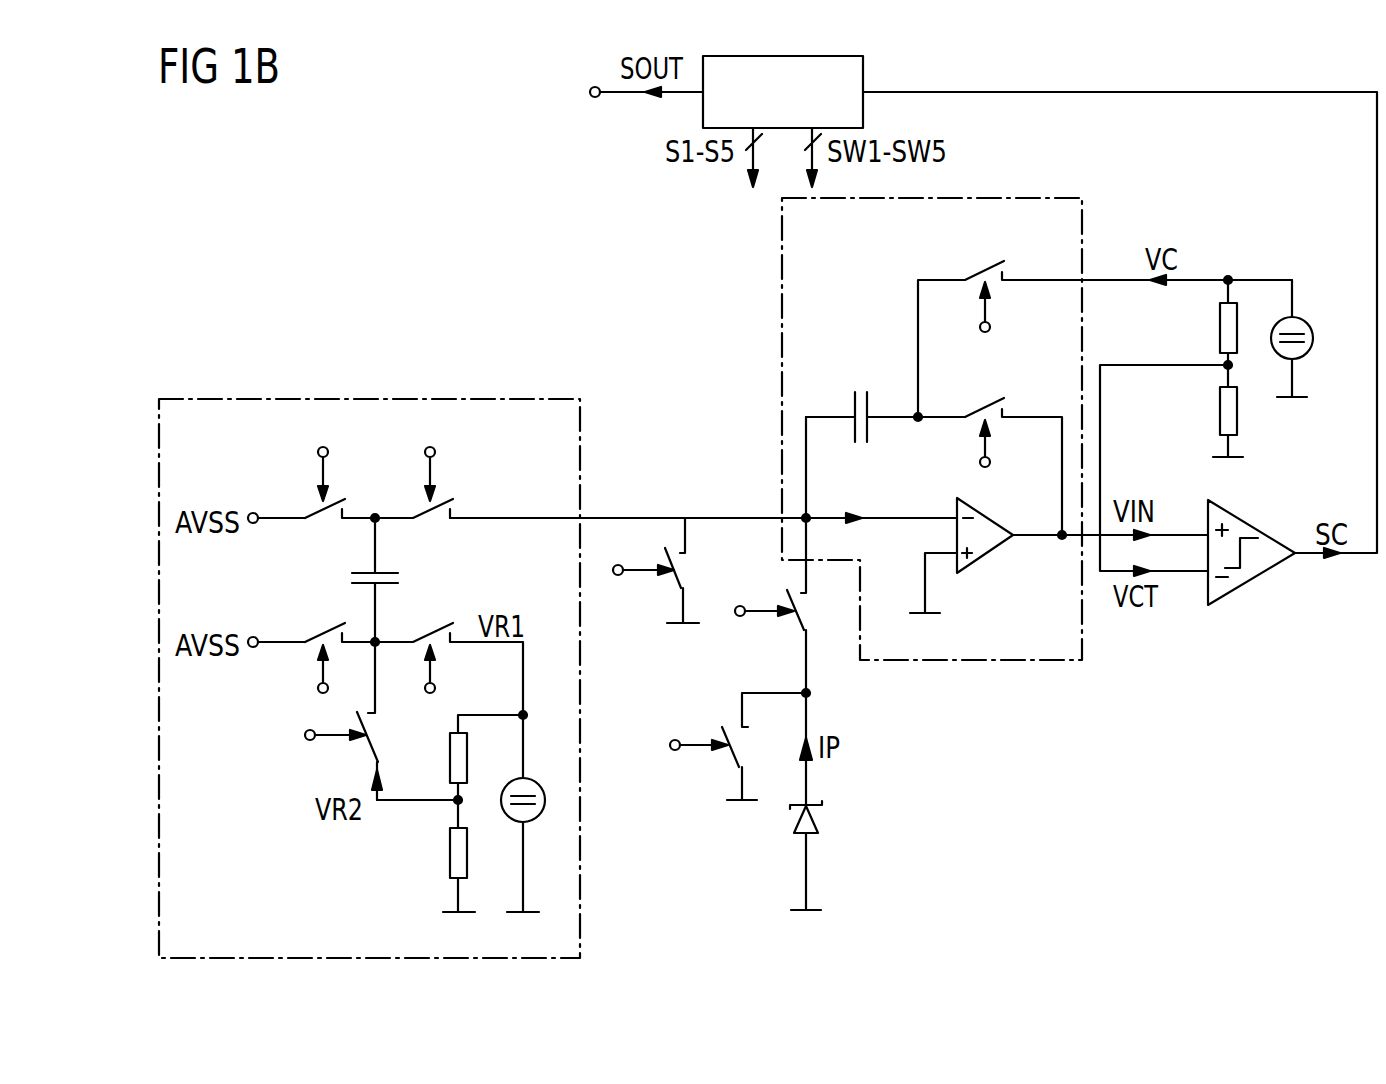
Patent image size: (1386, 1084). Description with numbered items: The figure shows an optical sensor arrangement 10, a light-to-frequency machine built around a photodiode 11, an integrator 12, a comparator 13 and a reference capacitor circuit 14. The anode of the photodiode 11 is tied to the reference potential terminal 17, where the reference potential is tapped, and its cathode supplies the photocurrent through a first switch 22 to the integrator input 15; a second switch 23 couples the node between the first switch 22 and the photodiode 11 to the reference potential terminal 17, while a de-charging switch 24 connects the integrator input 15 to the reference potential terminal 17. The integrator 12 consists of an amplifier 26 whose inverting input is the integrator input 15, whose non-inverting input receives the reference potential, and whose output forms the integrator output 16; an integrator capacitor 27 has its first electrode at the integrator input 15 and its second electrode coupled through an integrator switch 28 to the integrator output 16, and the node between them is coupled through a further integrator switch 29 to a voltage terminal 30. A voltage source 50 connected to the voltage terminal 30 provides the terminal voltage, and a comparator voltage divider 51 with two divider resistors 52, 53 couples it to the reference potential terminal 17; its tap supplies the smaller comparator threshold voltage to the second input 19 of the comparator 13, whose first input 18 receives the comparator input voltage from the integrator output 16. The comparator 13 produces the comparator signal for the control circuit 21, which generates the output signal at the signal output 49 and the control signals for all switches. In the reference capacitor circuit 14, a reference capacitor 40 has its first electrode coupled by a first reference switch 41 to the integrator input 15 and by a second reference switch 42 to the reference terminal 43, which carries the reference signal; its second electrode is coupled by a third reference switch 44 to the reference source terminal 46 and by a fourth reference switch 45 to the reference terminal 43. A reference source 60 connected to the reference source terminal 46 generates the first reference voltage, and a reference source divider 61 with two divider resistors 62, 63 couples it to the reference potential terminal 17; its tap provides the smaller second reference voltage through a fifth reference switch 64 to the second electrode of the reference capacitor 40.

The optical sensor arrangement 10 is at (338, 196).
The photodiode 11 is at (823, 820).
The integrator 12 is at (781, 302).
The comparator 13 is at (1250, 580).
The reference capacitor circuit 14 is at (360, 399).
The integrator input 15 is at (809, 515).
The integrator output 16 is at (1060, 532).
The reference potential terminal 17 is at (515, 911).
The first input of the comparator 18 is at (1207, 528).
The second input of the comparator 19 is at (1207, 580).
The control circuit 21 is at (863, 72).
The first switch 22 is at (795, 620).
The second switch 23 is at (730, 758).
The de-charging switch 24 is at (672, 580).
The amplifier 26 is at (985, 556).
The integrator capacitor 27 is at (857, 391).
The integrator switch 28 is at (983, 406).
The further integrator switch 29 is at (983, 268).
The voltage terminal 30 is at (1092, 283).
The reference capacitor 40 is at (352, 573).
The first reference switch 41 is at (415, 514).
The second reference switch 42 is at (310, 514).
The reference terminal 43 is at (253, 513).
The third reference switch 44 is at (440, 622).
The fourth reference switch 45 is at (313, 637).
The reference source terminal 46 is at (521, 713).
The signal output 49 is at (700, 96).
The voltage source 50 is at (1306, 318).
The comparator voltage divider 51 is at (1248, 262).
The divider resistor 52 is at (1220, 327).
The divider resistor 53 is at (1220, 410).
The reference source 60 is at (537, 784).
The reference source divider 61 is at (425, 818).
The divider resistor 62 is at (450, 758).
The divider resistor 63 is at (450, 873).
The fifth reference switch 64 is at (365, 742).